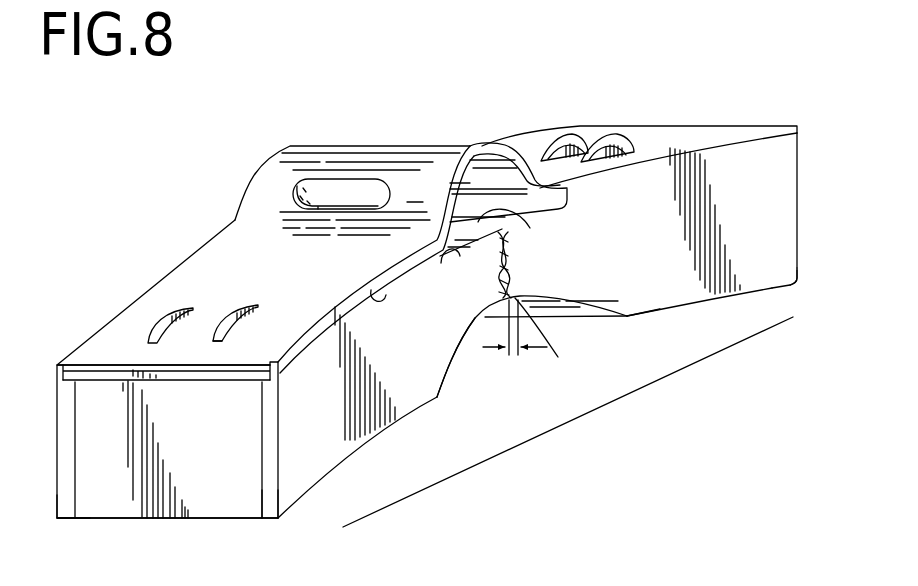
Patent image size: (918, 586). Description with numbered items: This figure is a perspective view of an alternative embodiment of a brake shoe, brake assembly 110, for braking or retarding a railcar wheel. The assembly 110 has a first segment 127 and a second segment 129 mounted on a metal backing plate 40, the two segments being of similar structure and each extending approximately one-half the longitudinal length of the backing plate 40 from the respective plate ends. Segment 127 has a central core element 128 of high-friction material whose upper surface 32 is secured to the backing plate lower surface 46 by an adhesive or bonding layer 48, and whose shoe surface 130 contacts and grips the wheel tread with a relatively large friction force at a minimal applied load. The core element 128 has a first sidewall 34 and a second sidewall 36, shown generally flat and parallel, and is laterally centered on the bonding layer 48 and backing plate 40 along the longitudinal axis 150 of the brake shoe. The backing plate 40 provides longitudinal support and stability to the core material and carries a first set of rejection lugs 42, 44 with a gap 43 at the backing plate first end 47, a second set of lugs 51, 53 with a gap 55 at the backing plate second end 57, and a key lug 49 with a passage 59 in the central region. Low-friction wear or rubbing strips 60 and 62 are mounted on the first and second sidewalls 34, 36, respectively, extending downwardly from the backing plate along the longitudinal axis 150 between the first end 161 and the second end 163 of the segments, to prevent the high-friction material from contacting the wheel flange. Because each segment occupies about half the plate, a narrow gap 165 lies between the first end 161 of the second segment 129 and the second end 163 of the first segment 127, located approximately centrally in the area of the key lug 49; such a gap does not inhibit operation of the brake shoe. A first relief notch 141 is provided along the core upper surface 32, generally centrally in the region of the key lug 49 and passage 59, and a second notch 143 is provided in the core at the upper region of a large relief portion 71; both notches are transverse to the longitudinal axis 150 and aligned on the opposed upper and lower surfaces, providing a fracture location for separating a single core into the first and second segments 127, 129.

The core upper surface 32 is at (449, 262).
The first sidewall 34 is at (74, 493).
The second sidewall 36 is at (268, 508).
The backing plate 40 is at (187, 283).
The rejection lug 42 is at (160, 322).
The gap 43 is at (200, 323).
The rejection lug 44 is at (244, 306).
The backing plate lower surface 46 is at (378, 296).
The backing plate first end 47 is at (63, 365).
The adhesive or bonding layer 48 is at (218, 380).
The key lug 49 is at (322, 145).
The lug 51 is at (563, 142).
The lug 53 is at (603, 138).
The gap 55 is at (693, 213).
The backing plate second end 57 is at (727, 125).
The passage 59 is at (498, 172).
The first wear strip 60 is at (68, 437).
The second wear strip 62 is at (268, 505).
The large relief portion 71 is at (560, 343).
The brake assembly 110 is at (666, 352).
The first segment 127 is at (330, 482).
The core element 128 is at (200, 499).
The second segment 129 is at (653, 326).
The shoe surface 130 is at (708, 299).
The first relief notch 141 is at (529, 226).
The second notch 143 is at (510, 298).
The longitudinal axis 150 is at (490, 460).
The first end 161 is at (63, 520).
The second end 163 is at (800, 285).
The gap 165 is at (515, 355).